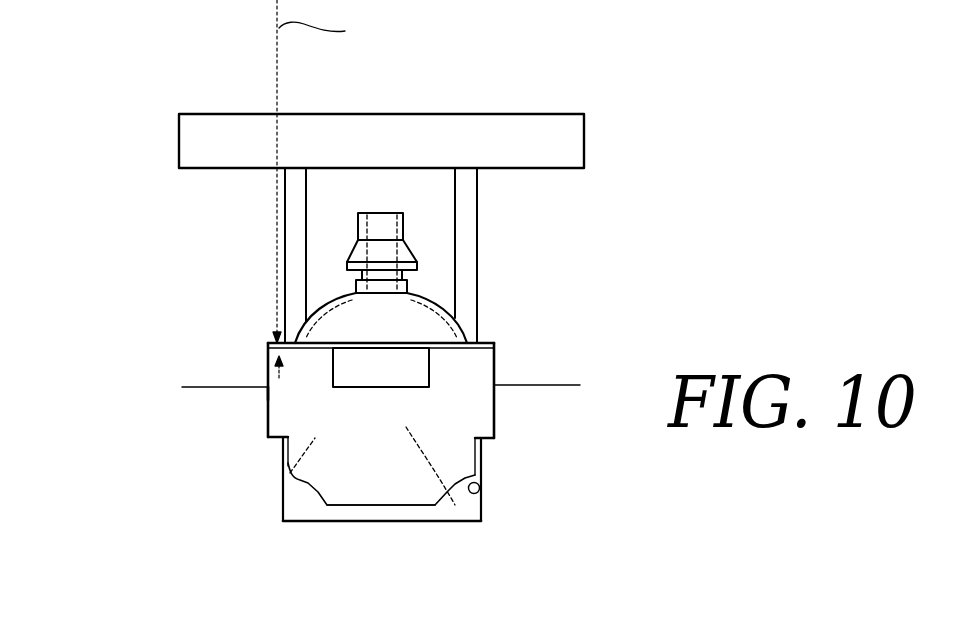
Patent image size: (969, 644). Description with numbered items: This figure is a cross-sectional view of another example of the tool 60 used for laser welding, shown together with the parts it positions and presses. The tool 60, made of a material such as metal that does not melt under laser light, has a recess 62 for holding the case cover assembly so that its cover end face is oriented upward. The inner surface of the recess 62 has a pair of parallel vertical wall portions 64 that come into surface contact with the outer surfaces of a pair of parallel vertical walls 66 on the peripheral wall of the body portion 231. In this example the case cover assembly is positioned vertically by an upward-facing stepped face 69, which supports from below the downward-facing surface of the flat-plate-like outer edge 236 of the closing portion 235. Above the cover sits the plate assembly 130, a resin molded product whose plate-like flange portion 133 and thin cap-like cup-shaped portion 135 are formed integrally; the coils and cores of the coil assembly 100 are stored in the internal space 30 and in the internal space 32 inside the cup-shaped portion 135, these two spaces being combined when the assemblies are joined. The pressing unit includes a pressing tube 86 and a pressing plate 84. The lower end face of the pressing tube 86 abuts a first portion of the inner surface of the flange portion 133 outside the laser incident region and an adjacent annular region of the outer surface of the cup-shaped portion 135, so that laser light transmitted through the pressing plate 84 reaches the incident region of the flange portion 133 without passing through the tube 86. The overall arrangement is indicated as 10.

The laser processing system 10 is at (729, 113).
The coil assembly 100 is at (664, 151).
The plate assembly 130 is at (568, 198).
The pressing plate 84 is at (492, 130).
The pressing tube 86 is at (468, 306).
The internal space 32 is at (457, 306).
The cup-shaped portion 135 is at (417, 231).
The tool 60 is at (571, 548).
The parallel vertical walls 66 is at (268, 414).
The parallel vertical wall portions 64 is at (268, 434).
The stepped face 69 is at (270, 441).
The plate-like flange portion 236 is at (283, 442).
The closing portion 235 is at (411, 498).
The recess 62 is at (483, 497).
The body portion 231 is at (290, 473).
The plate-like flange portion 133 is at (268, 392).
The internal space 30 is at (405, 425).